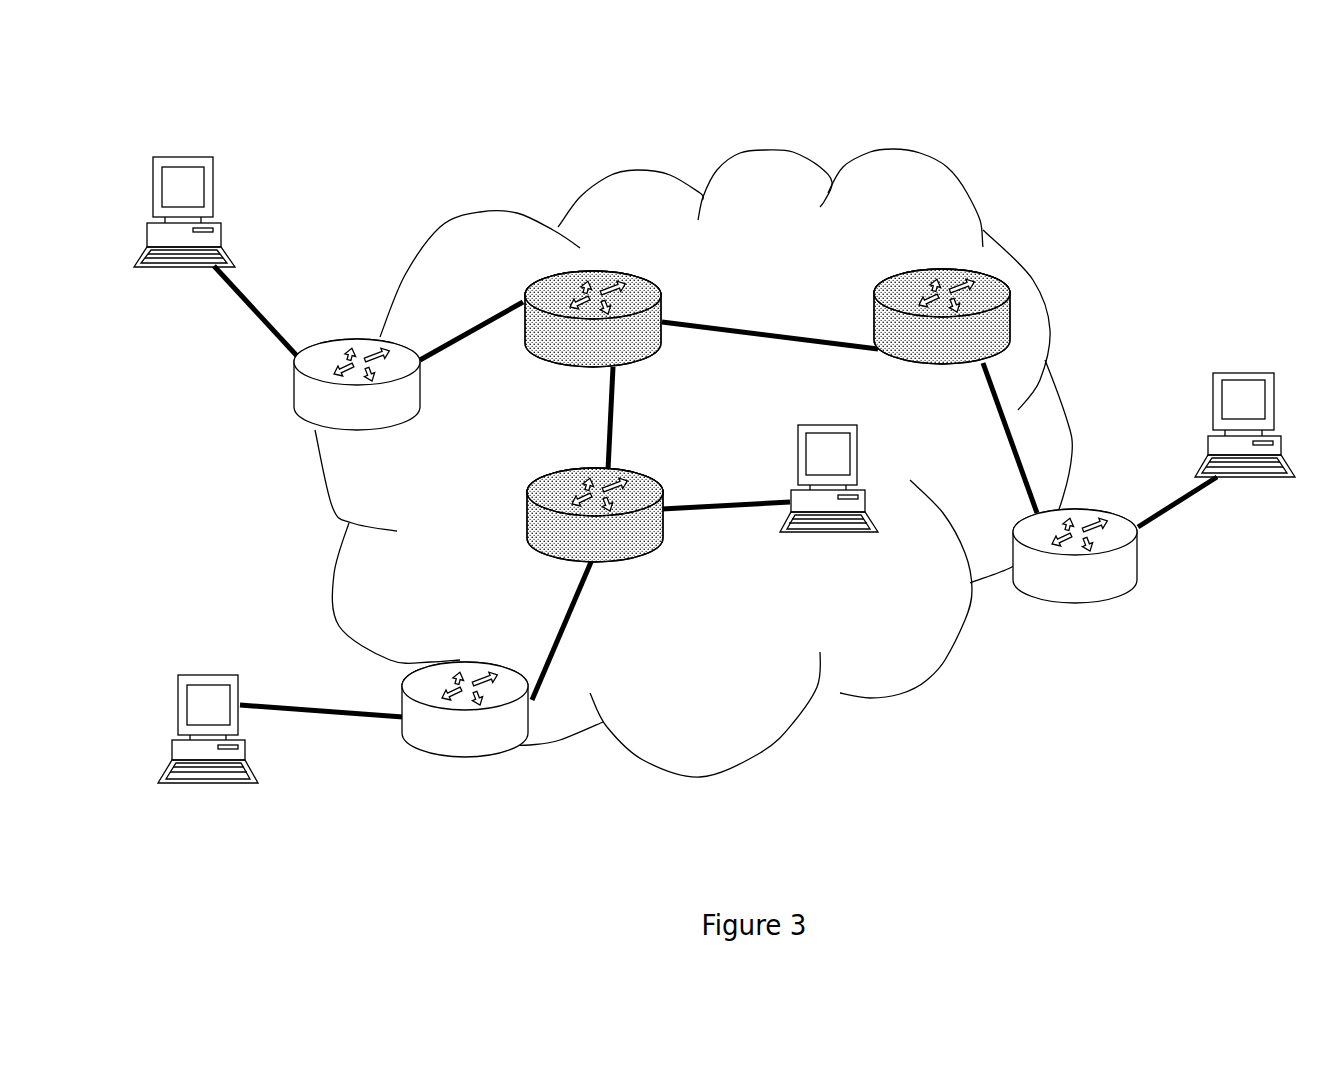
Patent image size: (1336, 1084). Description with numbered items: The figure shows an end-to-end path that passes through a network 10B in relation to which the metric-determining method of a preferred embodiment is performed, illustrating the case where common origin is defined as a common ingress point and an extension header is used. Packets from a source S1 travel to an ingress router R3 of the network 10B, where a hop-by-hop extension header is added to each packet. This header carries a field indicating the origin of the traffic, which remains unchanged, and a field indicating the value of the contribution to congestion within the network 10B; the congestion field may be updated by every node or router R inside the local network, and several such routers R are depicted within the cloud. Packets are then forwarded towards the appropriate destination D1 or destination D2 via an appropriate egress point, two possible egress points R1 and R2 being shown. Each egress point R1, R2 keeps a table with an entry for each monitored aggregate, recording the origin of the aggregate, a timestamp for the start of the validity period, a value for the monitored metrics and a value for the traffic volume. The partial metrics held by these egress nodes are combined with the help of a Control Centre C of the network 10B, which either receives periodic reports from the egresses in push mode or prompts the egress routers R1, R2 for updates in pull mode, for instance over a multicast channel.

The network 10B is at (955, 167).
The source S1 is at (218, 187).
The destination D1 is at (1245, 368).
The destination D2 is at (210, 673).
The egress point R1 is at (1077, 605).
The egress point R2 is at (467, 760).
The ingress router R3 is at (293, 385).
The router R is at (942, 367).
The Control Centre C is at (828, 535).